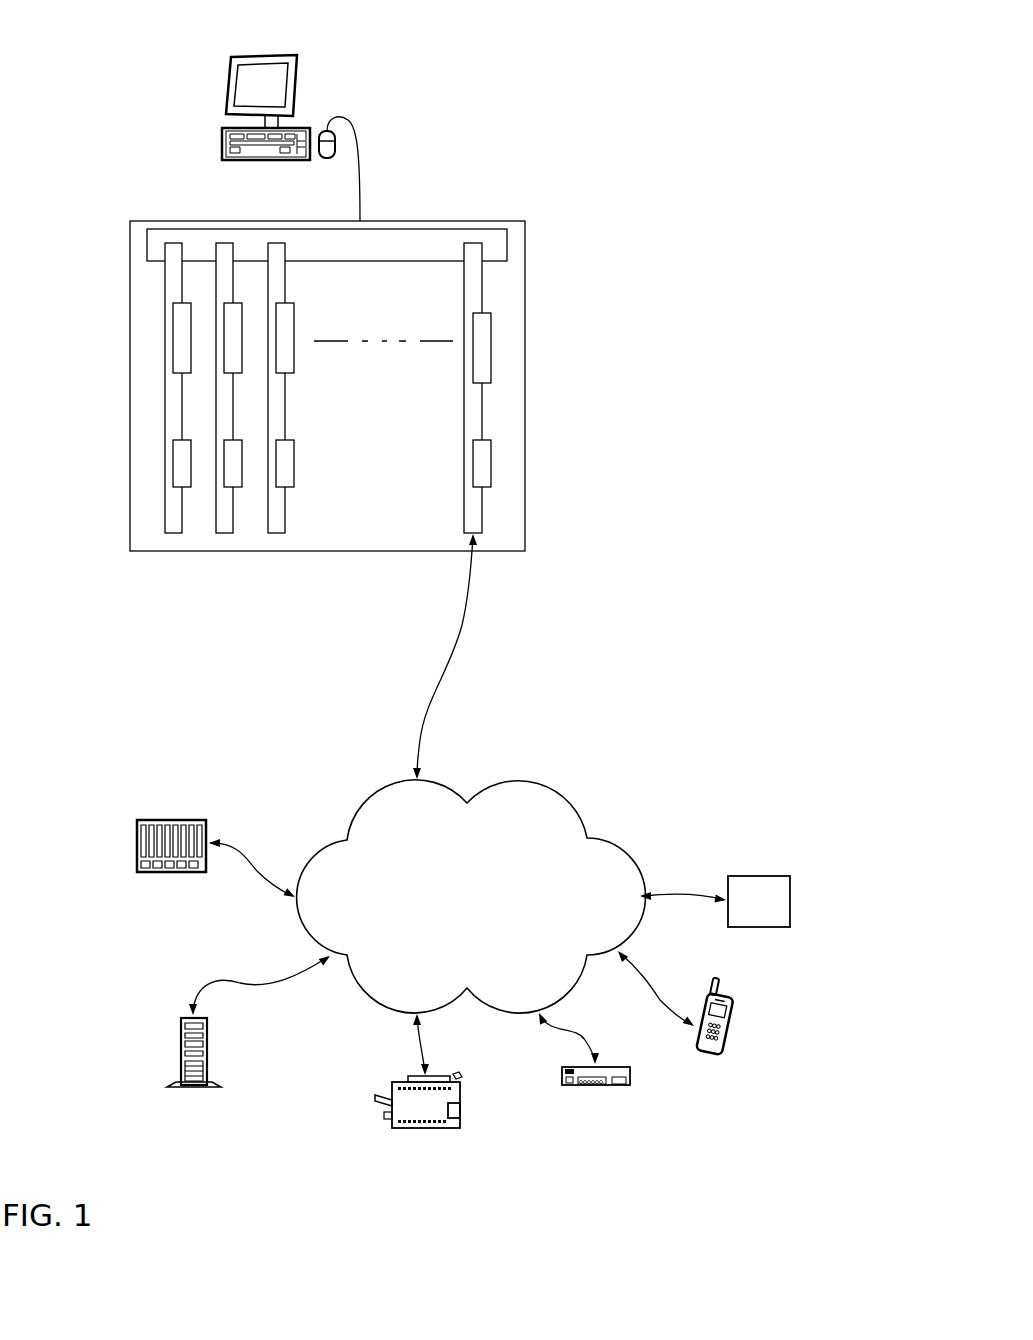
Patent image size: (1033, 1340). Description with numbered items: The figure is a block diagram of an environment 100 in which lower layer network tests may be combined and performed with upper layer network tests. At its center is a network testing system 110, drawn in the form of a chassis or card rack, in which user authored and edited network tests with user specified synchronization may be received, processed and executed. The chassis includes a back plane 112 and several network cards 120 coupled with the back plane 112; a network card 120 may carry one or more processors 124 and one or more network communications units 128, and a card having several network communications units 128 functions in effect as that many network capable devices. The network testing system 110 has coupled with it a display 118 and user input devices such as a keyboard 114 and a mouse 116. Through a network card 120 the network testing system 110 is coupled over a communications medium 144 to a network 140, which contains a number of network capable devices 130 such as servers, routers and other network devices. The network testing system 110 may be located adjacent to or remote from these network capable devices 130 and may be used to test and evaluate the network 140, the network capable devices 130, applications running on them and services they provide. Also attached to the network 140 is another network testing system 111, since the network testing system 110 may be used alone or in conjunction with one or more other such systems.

The environment 100 is at (82, 45).
The network testing system 110 is at (383, 221).
The back plane 112 is at (508, 244).
The keyboard 114 is at (222, 143).
The mouse 116 is at (327, 160).
The display 118 is at (232, 92).
The network card 120 is at (435, 460).
The processor 124 is at (492, 350).
The network communications unit 128 is at (492, 464).
The network capable device 130 is at (445, 1001).
The network 140 is at (471, 896).
The communications medium 144 is at (428, 695).
The other network testing system 111 is at (715, 901).